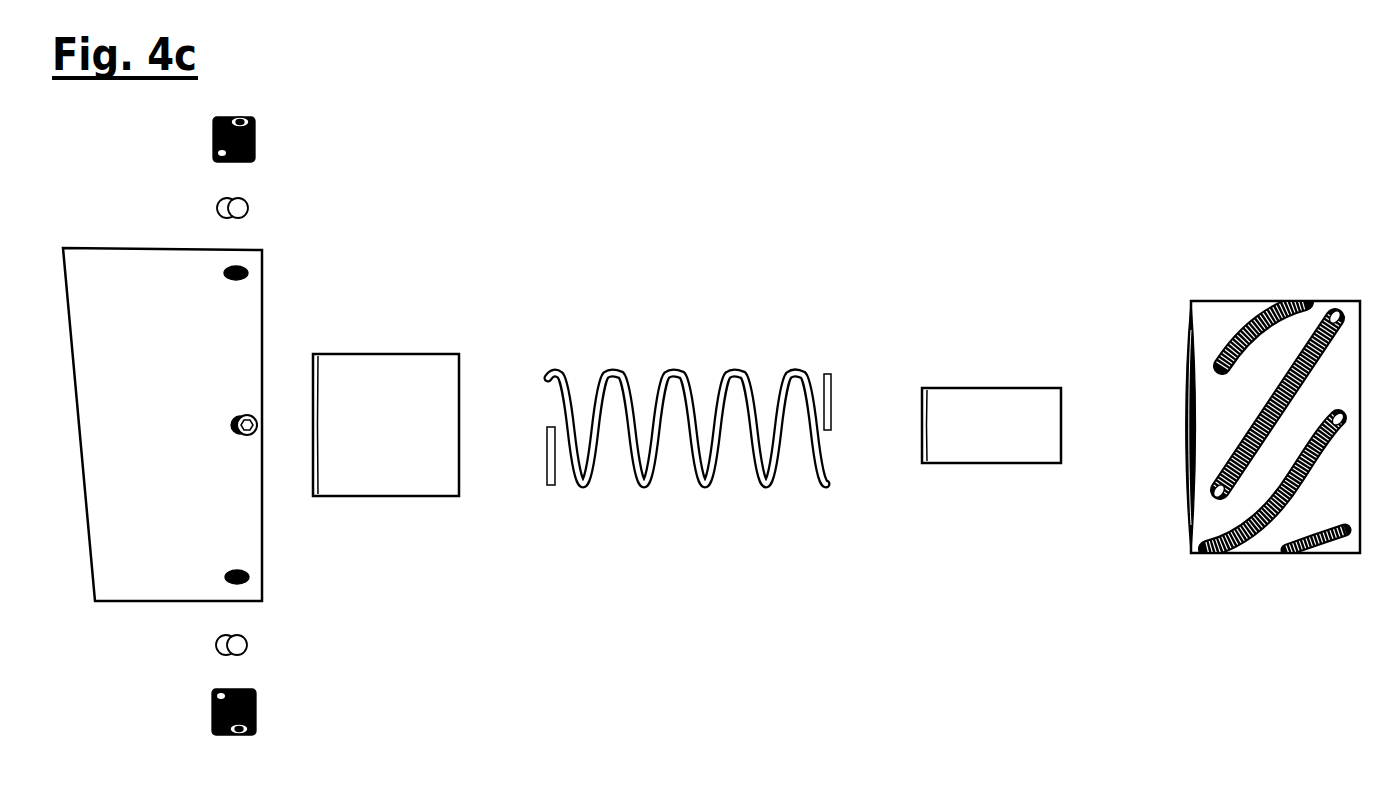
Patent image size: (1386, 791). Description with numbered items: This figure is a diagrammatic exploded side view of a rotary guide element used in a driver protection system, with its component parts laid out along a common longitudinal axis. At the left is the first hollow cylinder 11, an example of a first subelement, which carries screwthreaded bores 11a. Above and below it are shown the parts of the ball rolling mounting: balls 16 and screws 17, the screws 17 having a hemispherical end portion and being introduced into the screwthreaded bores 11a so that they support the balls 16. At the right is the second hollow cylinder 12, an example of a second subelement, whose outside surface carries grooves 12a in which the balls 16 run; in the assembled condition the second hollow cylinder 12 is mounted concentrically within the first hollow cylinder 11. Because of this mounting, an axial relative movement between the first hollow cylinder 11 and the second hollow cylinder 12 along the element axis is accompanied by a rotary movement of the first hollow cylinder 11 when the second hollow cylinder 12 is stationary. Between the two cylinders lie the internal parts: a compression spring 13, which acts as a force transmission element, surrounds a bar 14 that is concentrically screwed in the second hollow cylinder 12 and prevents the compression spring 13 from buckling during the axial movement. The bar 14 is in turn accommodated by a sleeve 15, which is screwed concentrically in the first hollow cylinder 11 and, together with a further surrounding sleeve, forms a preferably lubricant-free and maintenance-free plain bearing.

The first hollow cylinder 11 is at (136, 268).
The screwthreaded bores 11a is at (226, 276).
The second hollow cylinder 12 is at (1219, 310).
The grooves 12a is at (1218, 372).
The compression spring 13 is at (648, 385).
The bar 14 is at (945, 400).
The sleeve 15 is at (361, 375).
The balls 16 is at (248, 208).
The screws 17 is at (254, 146).